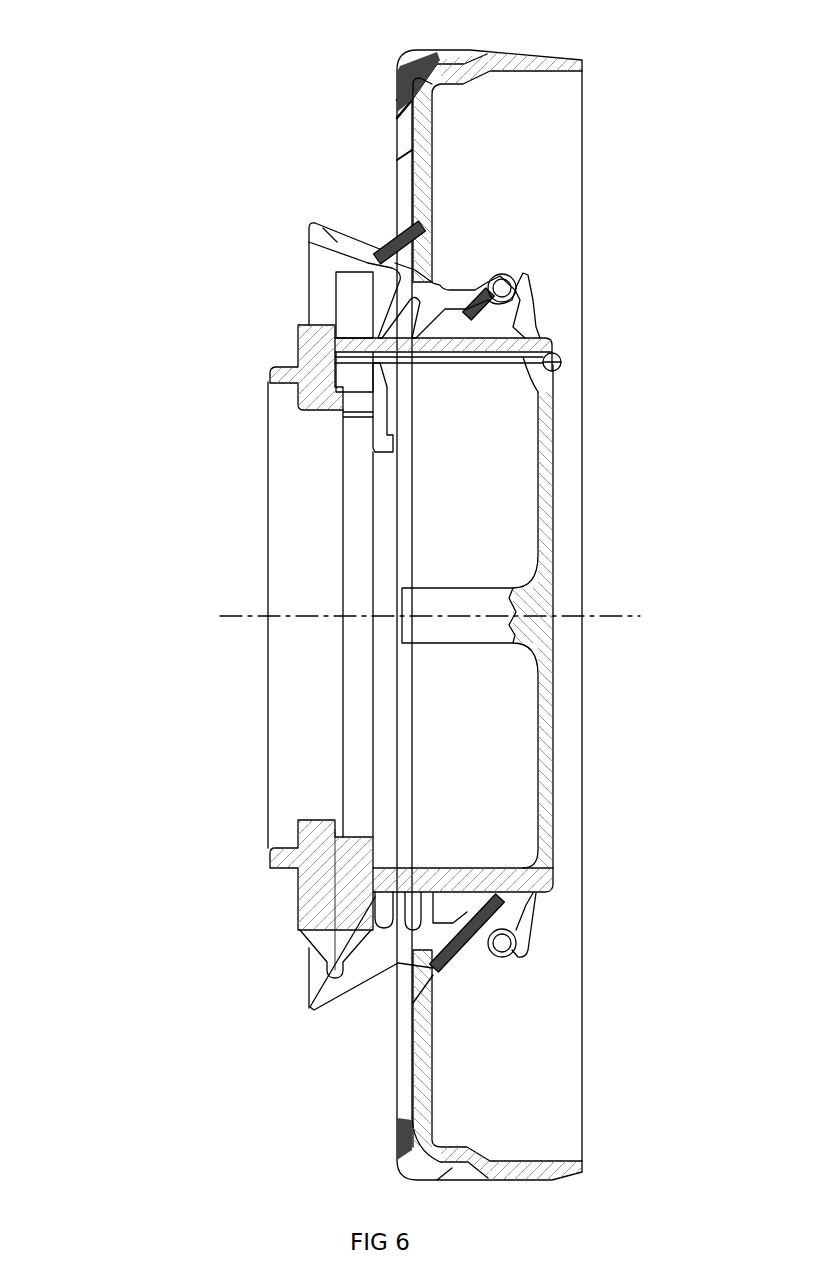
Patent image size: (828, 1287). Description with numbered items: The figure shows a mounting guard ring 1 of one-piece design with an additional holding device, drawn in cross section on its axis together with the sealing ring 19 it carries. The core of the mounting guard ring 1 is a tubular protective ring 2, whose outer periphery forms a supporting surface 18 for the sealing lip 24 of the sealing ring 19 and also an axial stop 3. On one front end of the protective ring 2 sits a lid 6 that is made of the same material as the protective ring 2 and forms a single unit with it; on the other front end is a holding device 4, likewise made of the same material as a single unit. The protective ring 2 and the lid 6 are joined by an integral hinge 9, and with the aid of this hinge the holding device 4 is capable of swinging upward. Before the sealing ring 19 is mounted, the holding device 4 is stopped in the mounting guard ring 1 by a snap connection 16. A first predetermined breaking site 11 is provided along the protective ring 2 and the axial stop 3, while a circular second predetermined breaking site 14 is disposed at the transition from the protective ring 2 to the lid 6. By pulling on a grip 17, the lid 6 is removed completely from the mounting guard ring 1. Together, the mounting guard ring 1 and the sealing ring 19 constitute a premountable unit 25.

The mounting guard ring 1 is at (190, 616).
The protective ring 2 is at (526, 881).
The axial stop 3 is at (350, 917).
The holding device 4 is at (312, 392).
The lid 6 is at (555, 515).
The integral hinge 9 is at (330, 966).
The first predetermined breaking site 11 is at (348, 291).
The second predetermined breaking site 14 is at (561, 365).
The snap connection 16 is at (392, 405).
The grip 17 is at (457, 636).
The supporting surface 18 is at (530, 334).
The sealing ring 19 is at (520, 56).
The sealing lip 24 is at (533, 298).
The premountable unit 25 is at (556, 907).